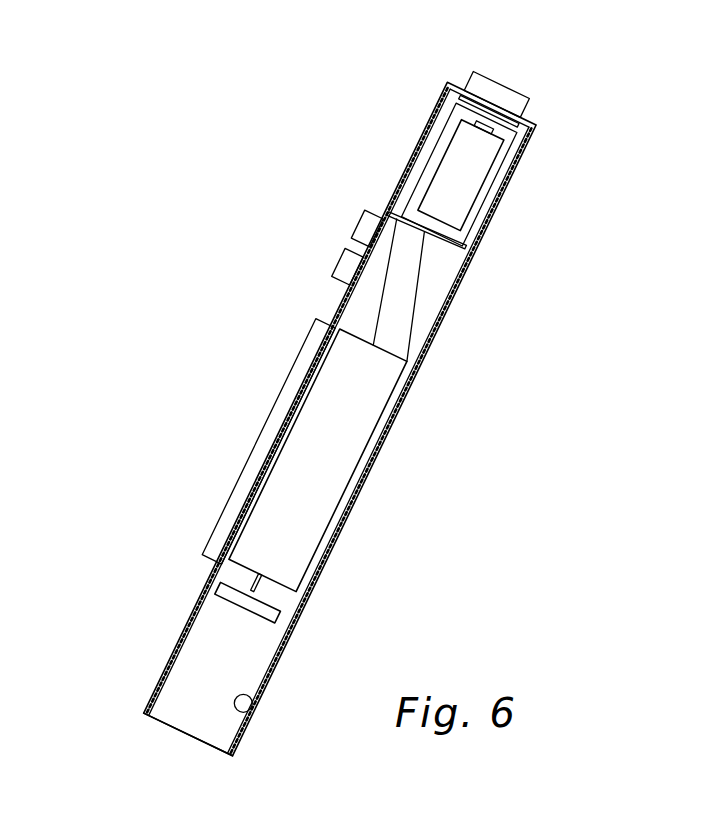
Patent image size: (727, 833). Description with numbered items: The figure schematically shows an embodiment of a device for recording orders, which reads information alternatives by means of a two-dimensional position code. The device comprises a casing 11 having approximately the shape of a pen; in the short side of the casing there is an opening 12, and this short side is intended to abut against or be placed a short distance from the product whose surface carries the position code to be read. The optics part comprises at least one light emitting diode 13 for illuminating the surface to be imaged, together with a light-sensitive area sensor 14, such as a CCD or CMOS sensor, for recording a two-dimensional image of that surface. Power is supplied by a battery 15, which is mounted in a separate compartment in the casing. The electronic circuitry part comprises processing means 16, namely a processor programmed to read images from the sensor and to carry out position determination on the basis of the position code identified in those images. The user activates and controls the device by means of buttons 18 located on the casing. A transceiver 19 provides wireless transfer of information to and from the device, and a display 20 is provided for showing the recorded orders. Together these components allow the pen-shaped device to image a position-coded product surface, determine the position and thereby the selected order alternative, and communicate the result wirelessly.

The casing 11 is at (421, 384).
The opening 12 is at (174, 729).
The light emitting diode 13 is at (246, 702).
The light-sensitive area sensor 14 is at (281, 601).
The battery 15 is at (459, 187).
The processing means 16 is at (318, 493).
The buttons 18 is at (365, 229).
The transceiver 19 is at (497, 89).
The display 20 is at (252, 466).